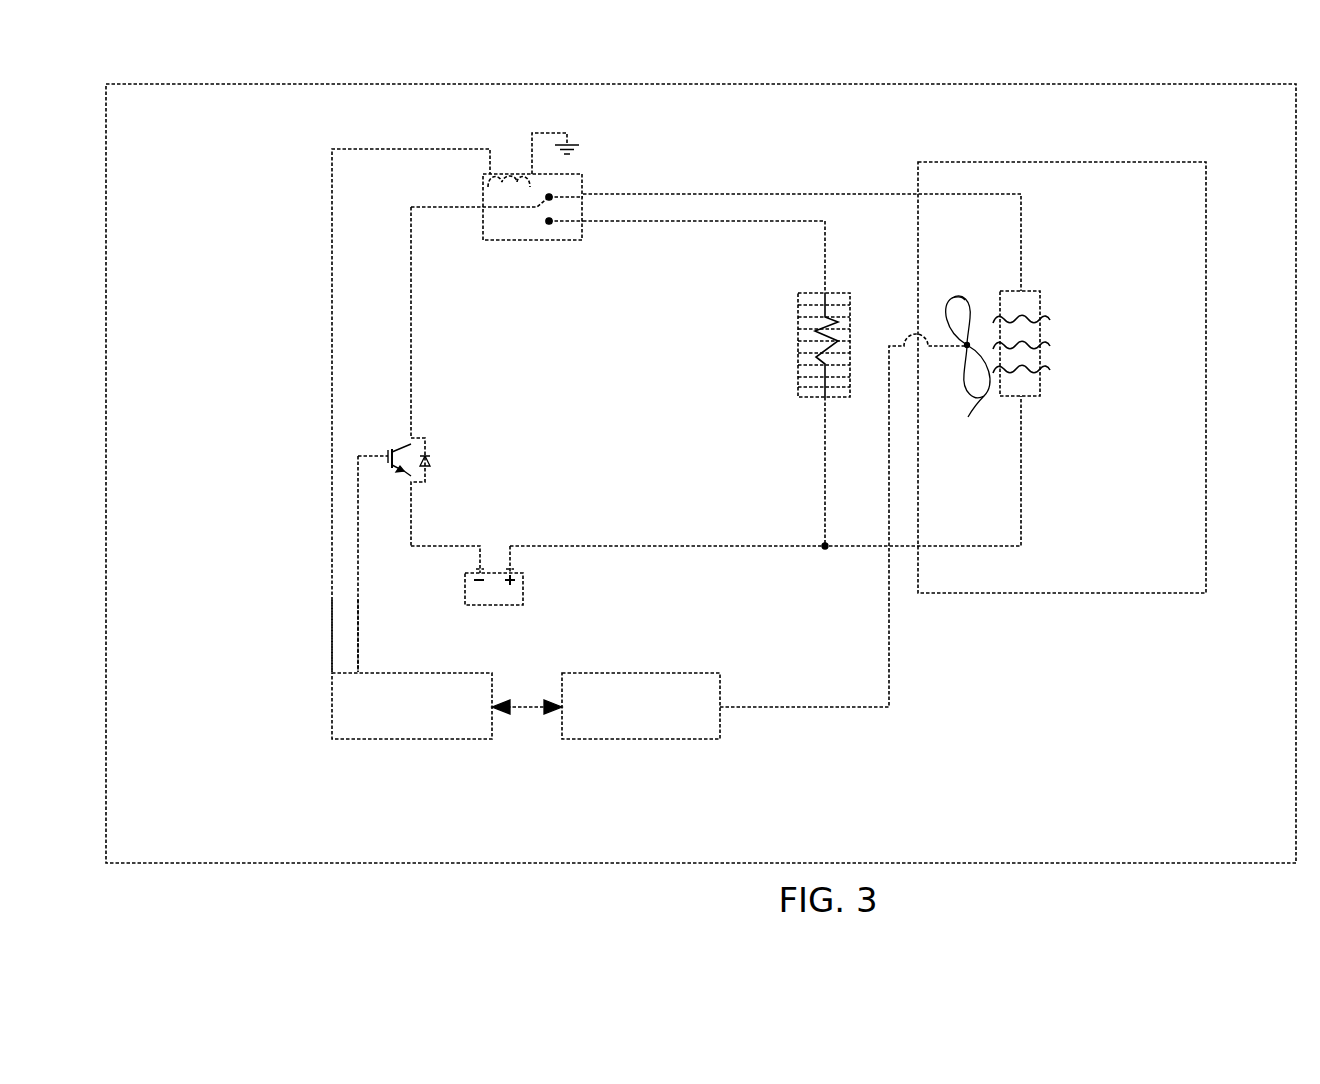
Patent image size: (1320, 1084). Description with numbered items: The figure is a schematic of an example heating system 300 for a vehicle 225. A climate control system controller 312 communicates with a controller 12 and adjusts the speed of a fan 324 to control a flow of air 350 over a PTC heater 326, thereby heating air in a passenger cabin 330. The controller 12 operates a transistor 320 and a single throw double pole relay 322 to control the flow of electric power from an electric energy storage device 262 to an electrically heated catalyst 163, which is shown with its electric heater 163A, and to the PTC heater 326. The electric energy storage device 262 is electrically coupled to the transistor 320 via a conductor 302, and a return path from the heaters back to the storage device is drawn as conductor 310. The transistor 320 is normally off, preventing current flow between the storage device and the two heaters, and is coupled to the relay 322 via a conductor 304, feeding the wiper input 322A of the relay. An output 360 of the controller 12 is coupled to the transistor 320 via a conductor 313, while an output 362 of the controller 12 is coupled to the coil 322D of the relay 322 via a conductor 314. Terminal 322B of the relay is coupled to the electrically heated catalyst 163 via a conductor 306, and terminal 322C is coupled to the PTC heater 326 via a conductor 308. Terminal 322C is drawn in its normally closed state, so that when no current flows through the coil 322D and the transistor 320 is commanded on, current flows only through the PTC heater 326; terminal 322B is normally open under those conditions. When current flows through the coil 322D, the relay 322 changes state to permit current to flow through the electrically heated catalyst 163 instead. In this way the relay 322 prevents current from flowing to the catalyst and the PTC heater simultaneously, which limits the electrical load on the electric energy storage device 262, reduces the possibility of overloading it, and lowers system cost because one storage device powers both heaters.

The vehicle 225 is at (1268, 864).
The heating system 300 is at (262, 146).
The single throw double pole relay 322 is at (518, 241).
The wiper input 322A is at (483, 205).
The terminal 322B is at (583, 221).
The terminal 322C is at (583, 192).
The coil 322D is at (518, 172).
The conductor 314 is at (332, 525).
The conductor 304 is at (411, 272).
The conductor 308 is at (778, 194).
The conductor 306 is at (800, 222).
The electrically heated catalyst 163 is at (806, 341).
The electric heater 163A is at (808, 329).
The transistor 320 is at (402, 478).
The conductor 313 is at (358, 577).
The output 360 is at (358, 672).
The output 362 is at (332, 672).
The conductor 302 is at (445, 547).
The battery positive line 310 is at (545, 546).
The electric energy storage device 262 is at (480, 600).
The controller 12 is at (412, 706).
The climate control system controller 312 is at (641, 706).
The passenger cabin 330 is at (970, 594).
The fan 324 is at (856, 501).
The PTC heater 326 is at (1036, 398).
The flow of air 350 is at (1048, 318).